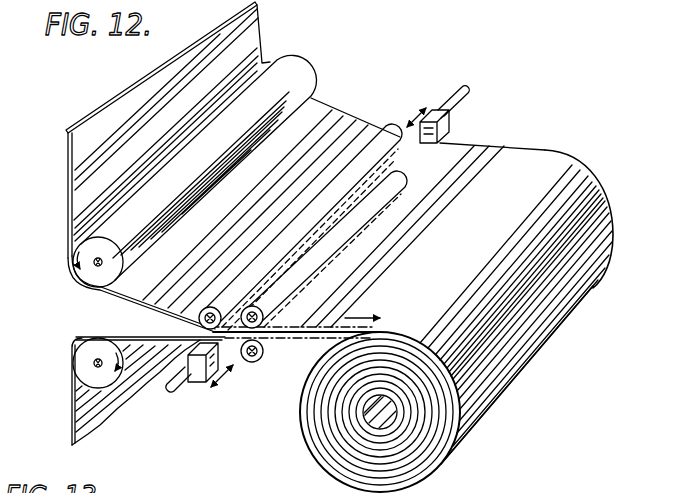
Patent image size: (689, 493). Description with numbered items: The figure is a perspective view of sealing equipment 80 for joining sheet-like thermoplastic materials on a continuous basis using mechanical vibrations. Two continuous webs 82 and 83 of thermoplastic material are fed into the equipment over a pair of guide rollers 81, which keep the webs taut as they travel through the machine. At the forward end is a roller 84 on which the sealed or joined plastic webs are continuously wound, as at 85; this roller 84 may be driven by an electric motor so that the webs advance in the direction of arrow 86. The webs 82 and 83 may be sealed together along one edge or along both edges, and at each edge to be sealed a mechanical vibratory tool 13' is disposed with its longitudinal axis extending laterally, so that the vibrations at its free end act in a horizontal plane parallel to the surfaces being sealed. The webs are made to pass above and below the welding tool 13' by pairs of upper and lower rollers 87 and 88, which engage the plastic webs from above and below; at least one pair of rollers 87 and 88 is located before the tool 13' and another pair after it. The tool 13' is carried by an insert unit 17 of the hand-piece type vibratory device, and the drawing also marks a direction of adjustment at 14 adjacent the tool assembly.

The sealing equipment 80 is at (388, 95).
The direction of adjustment arrow 14 is at (411, 121).
The insert unit 17 is at (463, 91).
The mechanical vibratory tool 13' is at (348, 240).
The continuous web 82 is at (72, 172).
The guide rollers 81 is at (80, 266).
The continuous web 83 is at (72, 422).
The roller 84 is at (373, 398).
The wound sealed webs 85 is at (525, 368).
The arrow 86 is at (369, 301).
The upper rollers 87 is at (209, 304).
The lower rollers 88 is at (262, 355).